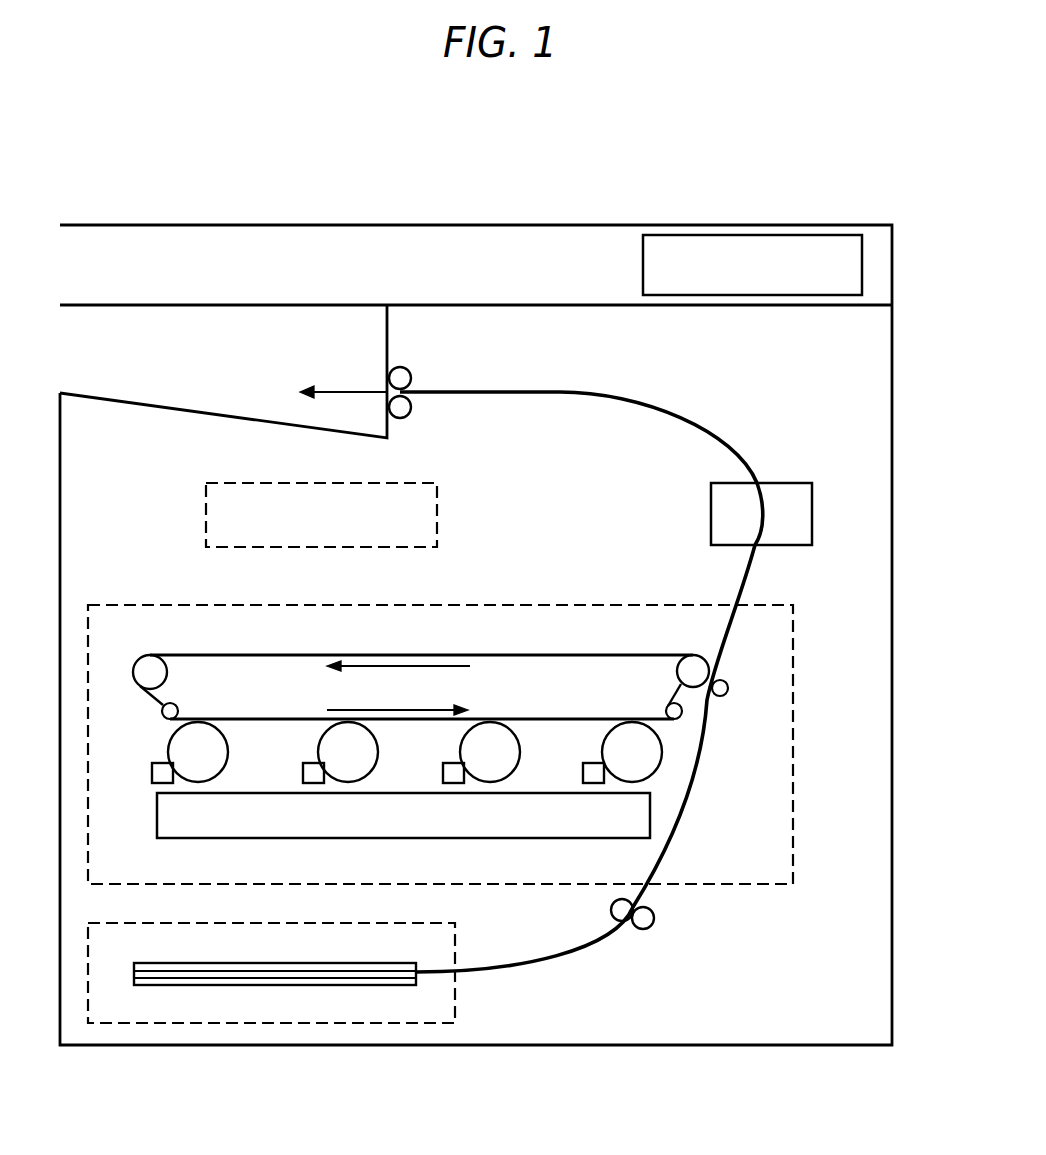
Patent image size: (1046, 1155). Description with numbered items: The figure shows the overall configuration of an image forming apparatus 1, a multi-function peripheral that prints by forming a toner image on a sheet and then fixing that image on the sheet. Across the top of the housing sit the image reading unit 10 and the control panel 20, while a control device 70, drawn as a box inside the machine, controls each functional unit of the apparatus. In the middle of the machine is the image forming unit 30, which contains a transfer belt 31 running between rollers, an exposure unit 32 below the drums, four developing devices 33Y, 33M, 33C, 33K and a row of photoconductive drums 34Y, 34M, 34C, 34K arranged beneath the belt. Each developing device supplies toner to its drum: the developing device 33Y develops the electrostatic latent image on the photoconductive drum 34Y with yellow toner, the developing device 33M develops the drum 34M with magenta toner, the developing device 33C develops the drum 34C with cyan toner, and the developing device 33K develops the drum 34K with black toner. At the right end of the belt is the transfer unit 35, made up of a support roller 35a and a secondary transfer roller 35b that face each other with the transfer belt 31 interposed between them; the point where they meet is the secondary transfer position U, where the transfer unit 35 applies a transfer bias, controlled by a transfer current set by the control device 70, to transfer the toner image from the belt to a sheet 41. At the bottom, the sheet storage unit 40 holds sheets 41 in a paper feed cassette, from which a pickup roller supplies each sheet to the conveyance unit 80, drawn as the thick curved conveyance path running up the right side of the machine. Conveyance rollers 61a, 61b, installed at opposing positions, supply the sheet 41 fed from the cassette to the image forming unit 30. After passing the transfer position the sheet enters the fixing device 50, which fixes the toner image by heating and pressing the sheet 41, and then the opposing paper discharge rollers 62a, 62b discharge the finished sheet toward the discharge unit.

The image forming apparatus 1 is at (810, 153).
The image reading unit 10 is at (578, 225).
The control panel 20 is at (823, 271).
The image forming unit 30 is at (615, 603).
The transfer belt 31 is at (402, 655).
The exposure unit 32 is at (157, 808).
The developing device 33Y is at (158, 773).
The developing device 33M is at (310, 773).
The developing device 33C is at (455, 773).
The developing device 33K is at (593, 773).
The photoconductive drum 34Y is at (188, 753).
The photoconductive drum 34M is at (333, 747).
The photoconductive drum 34C is at (485, 753).
The photoconductive drum 34K is at (623, 753).
The transfer unit 35 is at (705, 663).
The support roller 35a is at (697, 670).
The secondary transfer roller 35b is at (724, 694).
The secondary transfer position U is at (745, 673).
The sheet storage unit 40 is at (397, 923).
The sheet 41 is at (263, 963).
The fixing device 50 is at (790, 482).
The conveyance roller 61a is at (613, 907).
The conveyance roller 61b is at (655, 917).
The paper discharge roller 62a is at (411, 414).
The paper discharge roller 62b is at (410, 369).
The control device 70 is at (418, 483).
The conveyance unit 80 is at (652, 405).